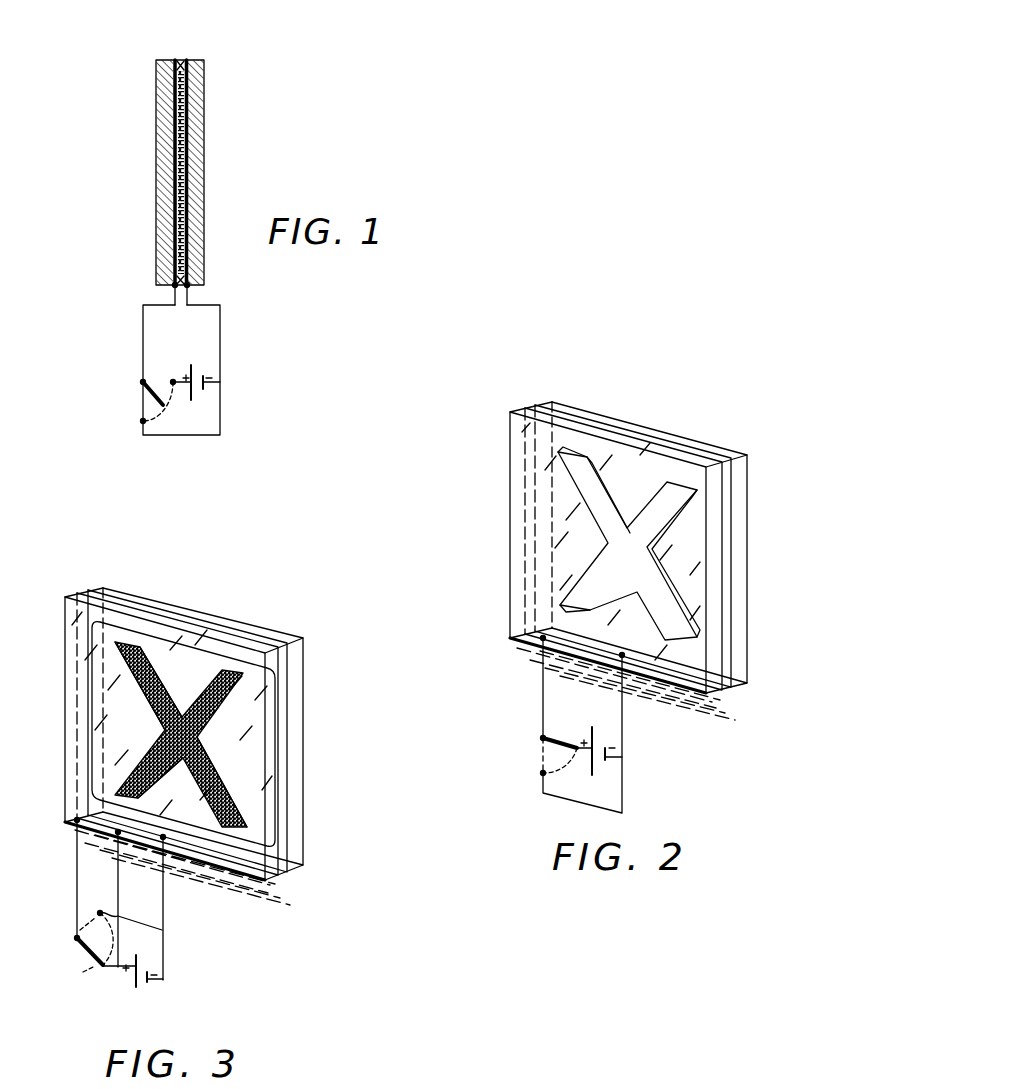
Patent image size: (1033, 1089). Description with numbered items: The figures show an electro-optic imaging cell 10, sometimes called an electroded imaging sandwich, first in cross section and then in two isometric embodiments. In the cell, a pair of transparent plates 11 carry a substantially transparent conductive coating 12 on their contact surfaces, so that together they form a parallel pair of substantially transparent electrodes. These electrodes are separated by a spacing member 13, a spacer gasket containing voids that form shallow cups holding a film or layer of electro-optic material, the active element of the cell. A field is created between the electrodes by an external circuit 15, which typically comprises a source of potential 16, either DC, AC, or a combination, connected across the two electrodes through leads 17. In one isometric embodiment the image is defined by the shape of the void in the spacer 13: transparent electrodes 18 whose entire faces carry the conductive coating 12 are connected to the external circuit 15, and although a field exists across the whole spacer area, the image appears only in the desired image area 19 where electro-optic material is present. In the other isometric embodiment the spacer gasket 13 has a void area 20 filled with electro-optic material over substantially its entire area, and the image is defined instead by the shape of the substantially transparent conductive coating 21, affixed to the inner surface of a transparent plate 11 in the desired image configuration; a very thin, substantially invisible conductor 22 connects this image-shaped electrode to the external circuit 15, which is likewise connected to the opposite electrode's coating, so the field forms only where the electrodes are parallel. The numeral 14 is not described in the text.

In FIG. 1, the imaging cell 10 is at (193, 157).
In FIG. 1, the transparent plates 11 is at (162, 105).
In FIG. 3, the transparent plates 11 is at (75, 594).
In FIG. 1, the substantially transparent conductive coating 12 is at (173, 60).
In FIG. 2, the substantially transparent conductive coating 12 is at (543, 380).
In FIG. 3, the substantially transparent conductive coating 12 is at (197, 615).
In FIG. 1, the spacing member 13 is at (170, 279).
In FIG. 2, the spacing member 13 is at (652, 442).
In FIG. 3, the spacing member 13 is at (88, 590).
In FIG. 1, the dielectric layer 14 is at (178, 152).
In FIG. 1, the external circuit 15 is at (197, 370).
In FIG. 2, the external circuit 15 is at (601, 762).
In FIG. 3, the external circuit 15 is at (142, 955).
In FIG. 1, the source of potential 16 is at (194, 372).
In FIG. 2, the source of potential 16 is at (593, 766).
In FIG. 3, the source of potential 16 is at (138, 988).
In FIG. 1, the leads 17 is at (190, 296).
In FIG. 2, the leads 17 is at (548, 677).
In FIG. 3, the leads 17 is at (77, 858).
In FIG. 2, the transparent electrodes 18 is at (510, 418).
In FIG. 2, the desired image area 19 is at (580, 467).
In FIG. 3, the void area 20 is at (116, 670).
In FIG. 3, the substantially transparent conductive coating in image configuration 21 is at (158, 702).
In FIG. 3, the substantially invisible conductor 22 is at (97, 812).